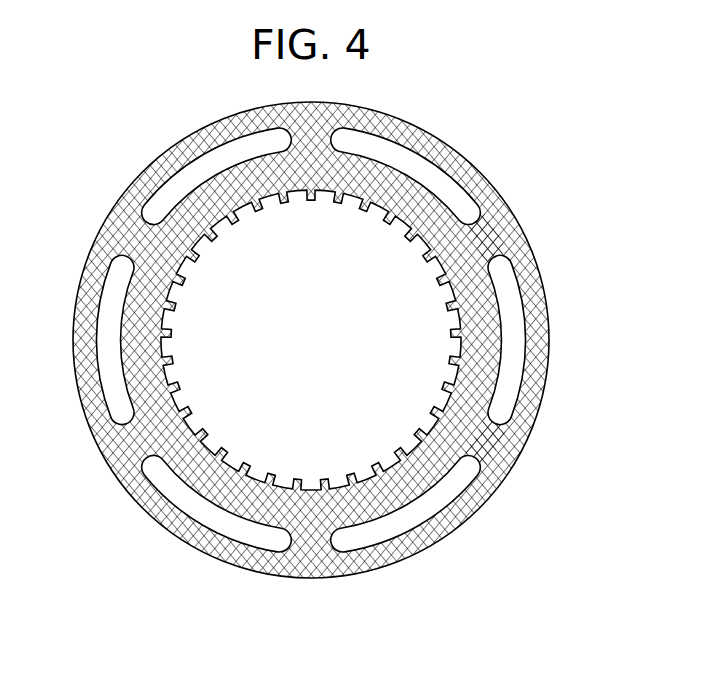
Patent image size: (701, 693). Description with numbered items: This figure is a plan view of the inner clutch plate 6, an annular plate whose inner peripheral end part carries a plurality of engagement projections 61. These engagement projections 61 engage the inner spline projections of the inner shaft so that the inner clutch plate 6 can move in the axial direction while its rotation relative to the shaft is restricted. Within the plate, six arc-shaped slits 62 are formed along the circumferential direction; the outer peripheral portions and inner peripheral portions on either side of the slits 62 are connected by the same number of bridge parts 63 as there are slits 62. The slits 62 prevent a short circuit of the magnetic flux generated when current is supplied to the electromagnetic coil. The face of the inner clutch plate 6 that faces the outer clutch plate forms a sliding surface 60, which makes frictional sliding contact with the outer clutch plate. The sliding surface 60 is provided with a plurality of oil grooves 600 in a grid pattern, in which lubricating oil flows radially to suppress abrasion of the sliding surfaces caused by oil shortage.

The inner clutch plate 6 is at (321, 331).
The oil grooves 600 is at (131, 190).
The sliding surface 60 is at (457, 233).
The engagement projections 61 is at (257, 207).
The slits 62 is at (470, 468).
The bridge parts 63 is at (521, 224).